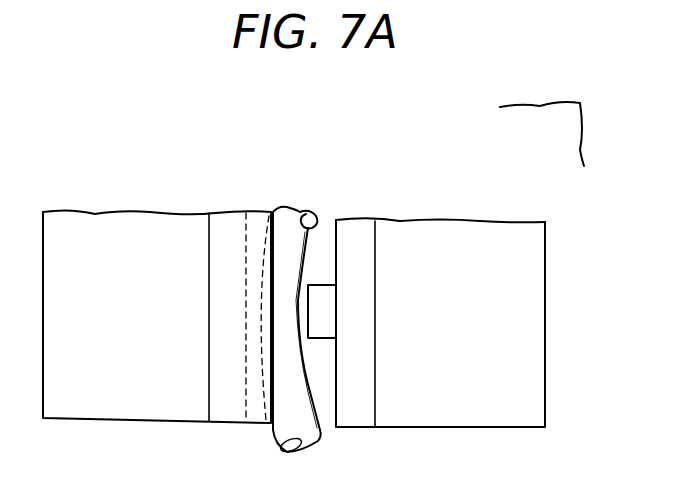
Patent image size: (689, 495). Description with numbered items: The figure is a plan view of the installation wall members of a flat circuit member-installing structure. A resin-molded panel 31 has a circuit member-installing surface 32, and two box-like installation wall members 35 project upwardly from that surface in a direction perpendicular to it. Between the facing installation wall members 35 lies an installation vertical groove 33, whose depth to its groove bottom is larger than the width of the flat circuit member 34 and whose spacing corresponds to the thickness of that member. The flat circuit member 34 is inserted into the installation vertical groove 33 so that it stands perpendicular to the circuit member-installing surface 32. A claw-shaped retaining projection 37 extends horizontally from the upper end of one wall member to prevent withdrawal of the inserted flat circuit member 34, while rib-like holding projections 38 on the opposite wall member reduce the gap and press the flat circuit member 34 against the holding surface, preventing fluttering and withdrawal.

The resin-molded panel 31 is at (516, 104).
The circuit member-installing surface 32 is at (524, 158).
The installation vertical groove 33 is at (336, 270).
The flat circuit member 34 is at (293, 246).
The installation wall member 35 is at (142, 219).
The retaining projection 37 is at (262, 218).
The holding projection 38 is at (332, 310).